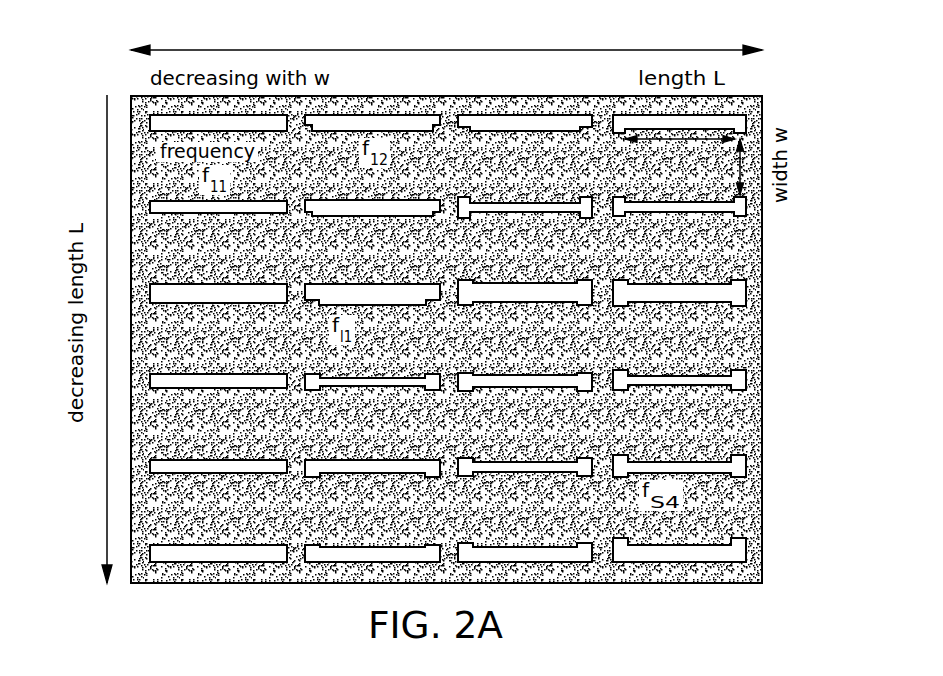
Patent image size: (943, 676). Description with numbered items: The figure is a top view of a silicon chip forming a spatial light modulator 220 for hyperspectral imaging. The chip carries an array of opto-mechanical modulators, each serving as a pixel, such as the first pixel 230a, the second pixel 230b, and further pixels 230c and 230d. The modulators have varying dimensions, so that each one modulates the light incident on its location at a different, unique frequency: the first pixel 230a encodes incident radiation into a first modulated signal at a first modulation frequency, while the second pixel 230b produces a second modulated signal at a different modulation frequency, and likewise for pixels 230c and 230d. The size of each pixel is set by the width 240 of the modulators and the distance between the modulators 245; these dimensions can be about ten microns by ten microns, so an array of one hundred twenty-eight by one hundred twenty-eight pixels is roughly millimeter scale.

The spatial light modulator 220 is at (131, 108).
The first pixel 230a is at (160, 120).
The second pixel 230b is at (397, 120).
The pixel 230c is at (399, 294).
The pixel 230d is at (685, 465).
The width of the modulators 240 is at (697, 145).
The distance between the modulators 245 is at (745, 168).